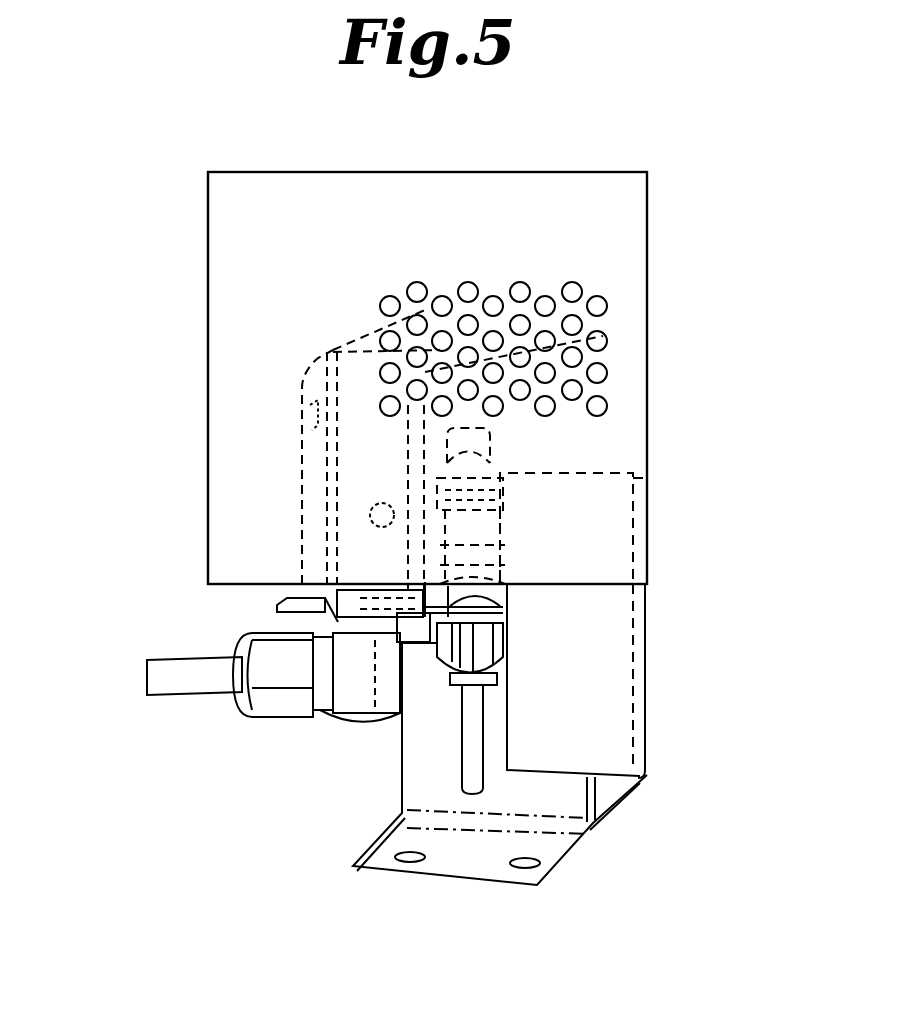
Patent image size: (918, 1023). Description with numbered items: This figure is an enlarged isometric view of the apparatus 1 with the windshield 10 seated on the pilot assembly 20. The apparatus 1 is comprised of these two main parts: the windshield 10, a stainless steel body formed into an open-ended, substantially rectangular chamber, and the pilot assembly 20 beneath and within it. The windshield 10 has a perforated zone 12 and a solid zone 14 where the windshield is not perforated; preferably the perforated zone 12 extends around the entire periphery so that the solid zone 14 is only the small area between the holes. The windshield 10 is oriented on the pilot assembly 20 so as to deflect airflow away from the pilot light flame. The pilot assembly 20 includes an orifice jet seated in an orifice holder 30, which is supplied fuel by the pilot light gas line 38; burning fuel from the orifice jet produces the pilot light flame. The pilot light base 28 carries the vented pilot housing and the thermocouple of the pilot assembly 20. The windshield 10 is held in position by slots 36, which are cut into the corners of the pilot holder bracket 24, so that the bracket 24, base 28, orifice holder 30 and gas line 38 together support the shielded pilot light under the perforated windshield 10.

The apparatus 1 is at (186, 160).
The windshield 10 is at (672, 206).
The perforated zone 12 is at (548, 322).
The solid zone 14 is at (245, 452).
The pilot assembly 20 is at (279, 889).
The pilot holder bracket 24 is at (605, 676).
The pilot light base 28 is at (300, 625).
The orifice holder 30 is at (353, 708).
The slots 36 is at (640, 543).
The pilot light gas line 38 is at (198, 685).